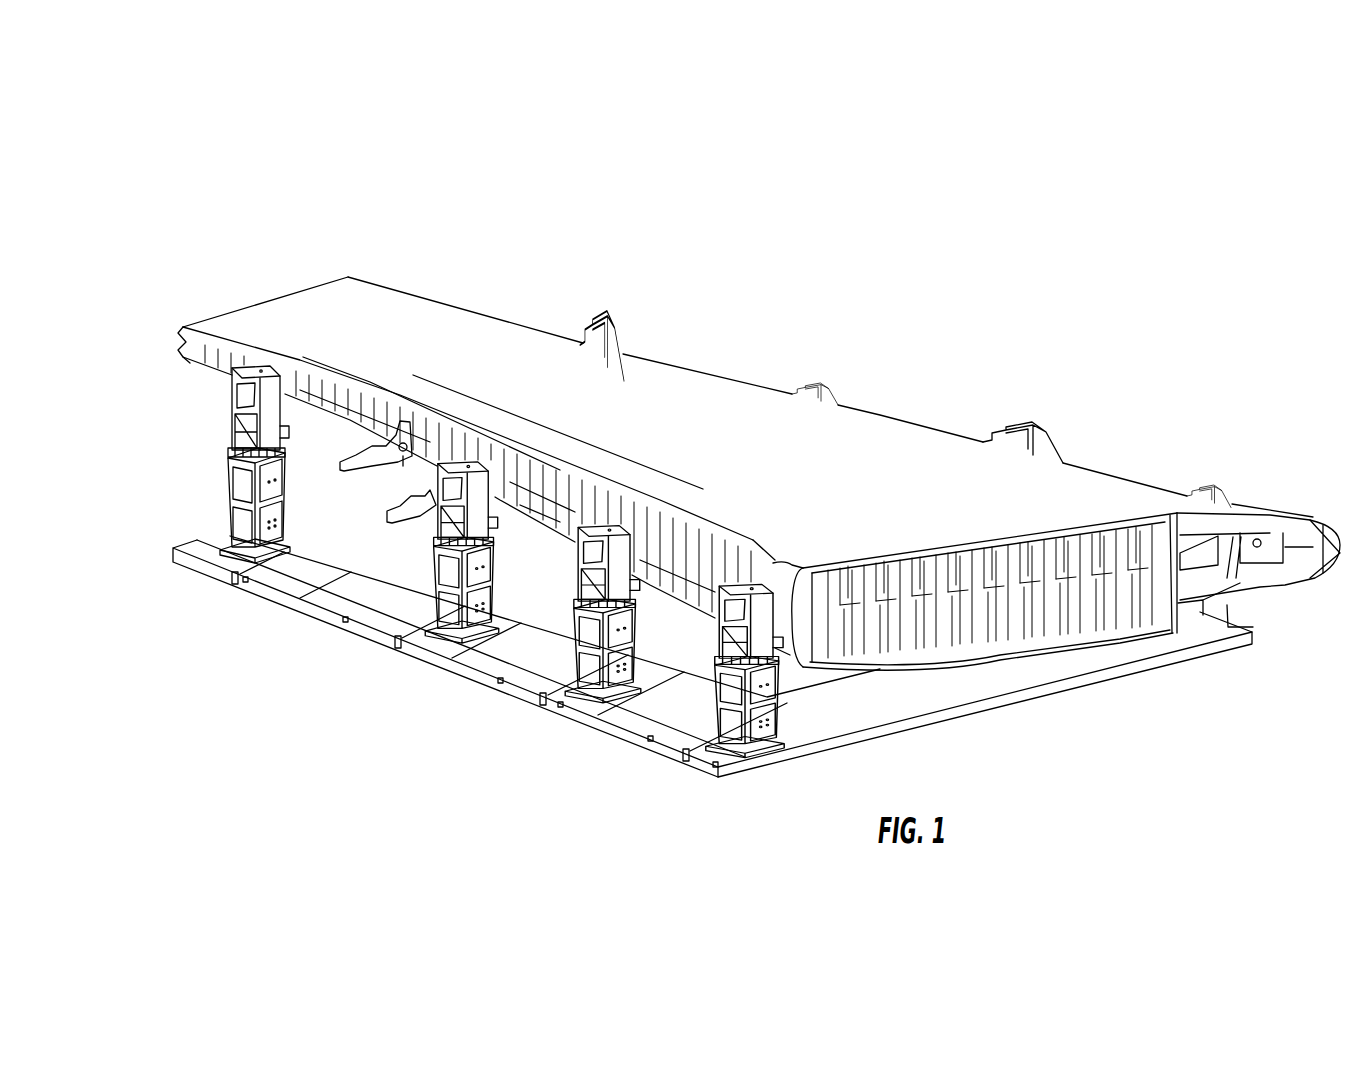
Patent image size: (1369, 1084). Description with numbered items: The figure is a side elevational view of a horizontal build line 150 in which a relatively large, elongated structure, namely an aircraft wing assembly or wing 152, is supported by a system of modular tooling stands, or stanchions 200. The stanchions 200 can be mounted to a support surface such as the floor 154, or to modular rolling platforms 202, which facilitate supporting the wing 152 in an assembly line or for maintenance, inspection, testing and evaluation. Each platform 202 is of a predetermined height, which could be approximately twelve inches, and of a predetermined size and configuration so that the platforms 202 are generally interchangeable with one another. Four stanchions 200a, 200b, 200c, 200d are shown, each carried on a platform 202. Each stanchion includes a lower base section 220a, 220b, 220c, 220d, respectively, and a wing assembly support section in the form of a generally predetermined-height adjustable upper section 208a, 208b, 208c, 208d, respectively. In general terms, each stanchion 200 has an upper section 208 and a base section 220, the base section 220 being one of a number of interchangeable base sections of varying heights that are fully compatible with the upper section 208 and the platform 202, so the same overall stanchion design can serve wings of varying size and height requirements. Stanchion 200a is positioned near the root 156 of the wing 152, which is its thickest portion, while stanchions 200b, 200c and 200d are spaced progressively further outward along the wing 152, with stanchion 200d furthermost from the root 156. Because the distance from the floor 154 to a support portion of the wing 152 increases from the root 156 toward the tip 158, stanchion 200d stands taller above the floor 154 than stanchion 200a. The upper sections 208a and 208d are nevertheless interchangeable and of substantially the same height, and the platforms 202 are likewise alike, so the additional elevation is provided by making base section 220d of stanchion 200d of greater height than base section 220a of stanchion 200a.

The horizontal build line 150 is at (1118, 425).
The wing 152 is at (298, 272).
The floor 154 is at (127, 565).
The root 156 is at (1127, 515).
The tip 158 is at (320, 285).
The stanchion 200 is at (163, 377).
The stanchion 200a is at (787, 682).
The stanchion 200b is at (623, 690).
The stanchion 200c is at (423, 578).
The stanchion 200d is at (217, 458).
The modular rolling platform 202 is at (193, 582).
The upper section 208 is at (227, 417).
The upper section 208a is at (710, 628).
The upper section 208b is at (577, 575).
The upper section 208c is at (427, 530).
The upper section 208d is at (267, 437).
The base section 220 is at (217, 495).
The base section 220a is at (760, 697).
The base section 220b is at (622, 635).
The base section 220c is at (497, 582).
The base section 220d is at (287, 500).